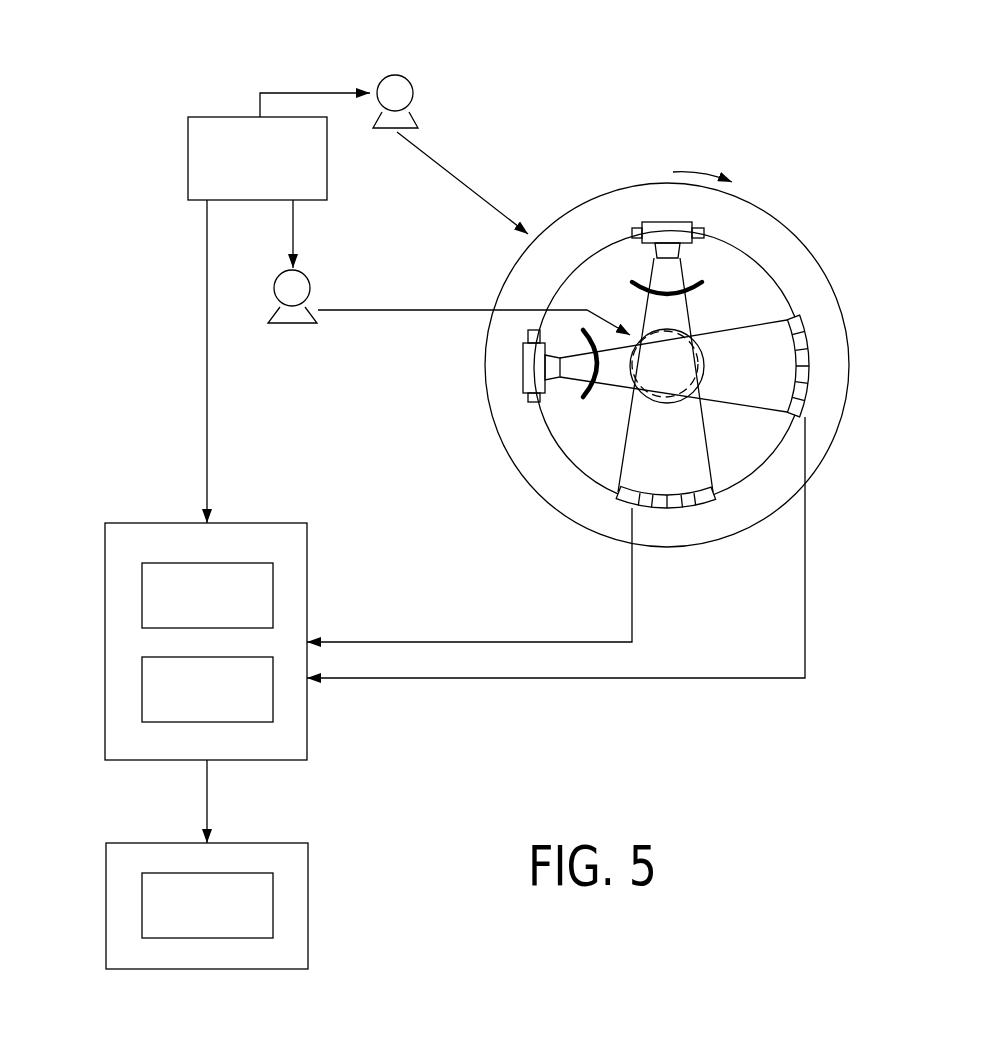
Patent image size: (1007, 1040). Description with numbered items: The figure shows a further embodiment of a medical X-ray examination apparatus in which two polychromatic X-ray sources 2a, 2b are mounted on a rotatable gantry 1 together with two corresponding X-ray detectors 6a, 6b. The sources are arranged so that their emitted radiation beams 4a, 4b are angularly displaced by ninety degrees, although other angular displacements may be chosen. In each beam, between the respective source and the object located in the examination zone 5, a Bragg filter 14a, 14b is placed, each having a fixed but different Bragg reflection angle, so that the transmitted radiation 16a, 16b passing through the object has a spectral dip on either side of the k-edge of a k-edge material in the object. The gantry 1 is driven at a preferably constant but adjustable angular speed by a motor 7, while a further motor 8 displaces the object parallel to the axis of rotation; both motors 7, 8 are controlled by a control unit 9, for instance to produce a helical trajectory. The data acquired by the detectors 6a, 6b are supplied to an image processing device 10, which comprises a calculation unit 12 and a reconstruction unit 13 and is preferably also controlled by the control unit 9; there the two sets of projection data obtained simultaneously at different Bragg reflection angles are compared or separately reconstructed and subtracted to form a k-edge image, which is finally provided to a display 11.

The gantry 1 is at (660, 200).
The X-ray source 2a is at (643, 224).
The X-ray source 2b is at (527, 375).
The radiation beam 4a is at (690, 280).
The radiation beam 4b is at (573, 383).
The examination zone 5 is at (690, 332).
The X-ray detector 6a is at (687, 508).
The X-ray detector 6b is at (808, 338).
The motor 7 is at (406, 75).
The motor 8 is at (312, 286).
The control unit 9 is at (205, 117).
The image processing device 10 is at (307, 718).
The display 11 is at (106, 910).
The calculation unit 12 is at (142, 598).
The reconstruction unit 13 is at (142, 680).
The Bragg filter 14a is at (632, 282).
The Bragg filter 14b is at (567, 387).
The transmitted radiation 16a is at (622, 453).
The transmitted radiation 16b is at (752, 322).